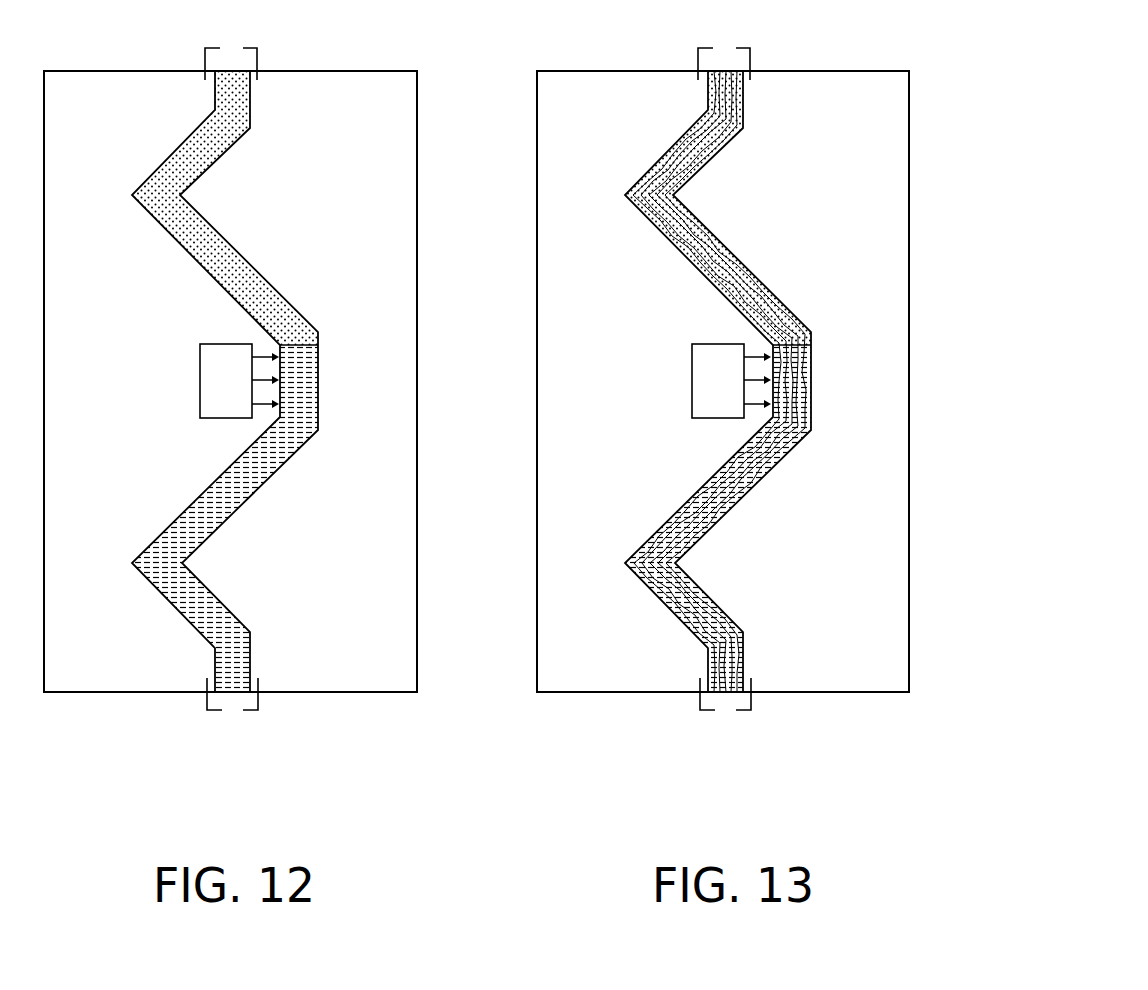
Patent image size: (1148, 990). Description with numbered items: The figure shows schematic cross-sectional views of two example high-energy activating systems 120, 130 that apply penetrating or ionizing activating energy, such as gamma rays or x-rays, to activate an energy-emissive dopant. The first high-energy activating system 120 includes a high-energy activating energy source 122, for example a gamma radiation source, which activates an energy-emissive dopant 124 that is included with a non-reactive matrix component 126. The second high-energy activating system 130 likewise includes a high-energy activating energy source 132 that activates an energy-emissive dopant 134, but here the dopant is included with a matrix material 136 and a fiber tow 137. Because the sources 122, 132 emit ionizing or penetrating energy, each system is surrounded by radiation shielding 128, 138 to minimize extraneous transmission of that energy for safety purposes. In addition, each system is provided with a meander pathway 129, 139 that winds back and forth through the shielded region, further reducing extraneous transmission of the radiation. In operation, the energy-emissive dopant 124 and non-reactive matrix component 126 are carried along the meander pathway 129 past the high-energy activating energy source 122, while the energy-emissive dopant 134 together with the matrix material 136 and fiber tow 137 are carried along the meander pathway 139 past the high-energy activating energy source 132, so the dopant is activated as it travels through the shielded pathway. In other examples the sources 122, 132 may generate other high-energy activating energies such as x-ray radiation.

In FIG. 12, the high-energy activating system 120 is at (306, 40).
In FIG. 12, the high-energy activating energy source 122 is at (213, 410).
In FIG. 12, the energy-emissive dopant 124 is at (250, 275).
In FIG. 12, the non-reactive matrix component 126 is at (176, 144).
In FIG. 12, the radiation shielding 128 is at (418, 403).
In FIG. 12, the meander pathway 129 is at (205, 56).
In FIG. 13, the high-energy activating system 130 is at (826, 40).
In FIG. 13, the high-energy activating energy source 132 is at (705, 410).
In FIG. 13, the energy-emissive dopant 134 is at (715, 283).
In FIG. 13, the matrix material 136 is at (669, 144).
In FIG. 13, the fiber tow 137 is at (707, 157).
In FIG. 13, the radiation shielding 138 is at (910, 403).
In FIG. 13, the meander pathway 139 is at (698, 56).